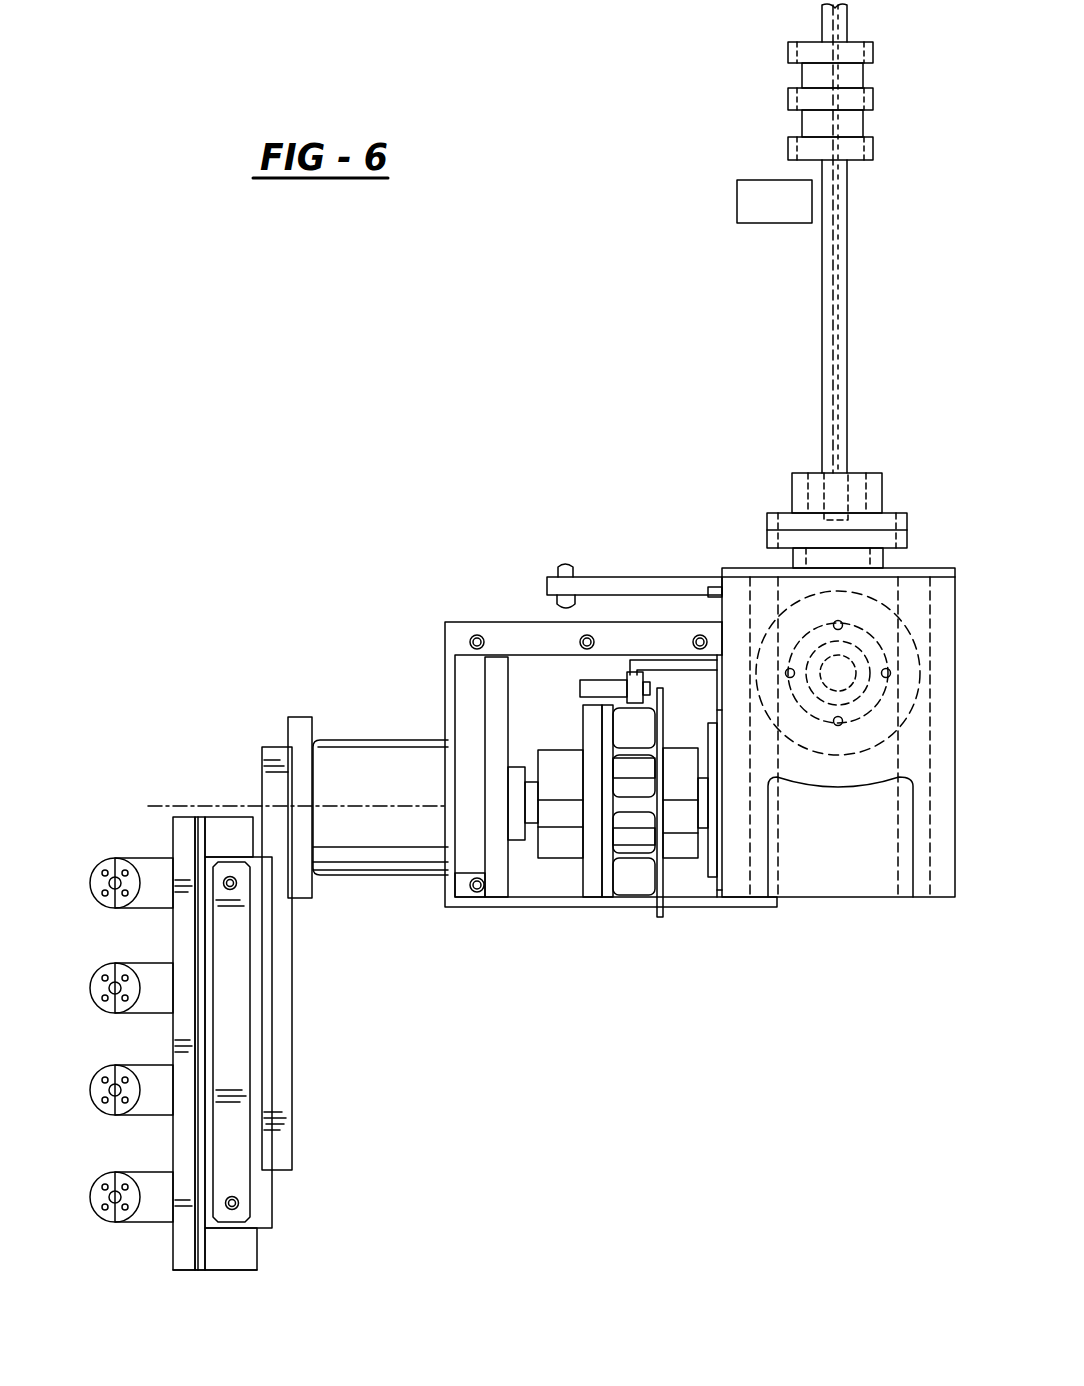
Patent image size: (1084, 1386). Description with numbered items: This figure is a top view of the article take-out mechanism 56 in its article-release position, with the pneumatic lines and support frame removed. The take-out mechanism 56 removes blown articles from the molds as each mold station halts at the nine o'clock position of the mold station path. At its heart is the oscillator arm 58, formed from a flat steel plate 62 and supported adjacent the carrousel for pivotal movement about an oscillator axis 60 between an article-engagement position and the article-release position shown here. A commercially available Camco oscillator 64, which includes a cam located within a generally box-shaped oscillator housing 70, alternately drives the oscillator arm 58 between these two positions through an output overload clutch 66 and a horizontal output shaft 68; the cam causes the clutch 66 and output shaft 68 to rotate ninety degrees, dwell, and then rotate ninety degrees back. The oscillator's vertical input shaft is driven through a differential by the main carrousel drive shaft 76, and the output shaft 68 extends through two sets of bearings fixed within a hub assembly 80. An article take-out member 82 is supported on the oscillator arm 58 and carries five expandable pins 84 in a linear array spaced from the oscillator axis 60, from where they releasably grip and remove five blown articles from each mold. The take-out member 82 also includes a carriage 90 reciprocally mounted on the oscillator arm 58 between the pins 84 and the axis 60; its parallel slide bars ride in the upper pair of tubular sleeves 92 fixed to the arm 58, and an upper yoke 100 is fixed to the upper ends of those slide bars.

The article take-out mechanism 56 is at (540, 500).
The oscillator arm 58 is at (292, 1147).
The oscillator axis 60 is at (163, 805).
The flat steel plate 62 is at (280, 1030).
The oscillator 64 is at (828, 905).
The output overload clutch 66 is at (593, 893).
The horizontal output shaft 68 is at (537, 825).
The oscillator housing 70 is at (915, 583).
The main carrousel drive shaft 76 is at (828, 293).
The hub assembly 80 is at (420, 752).
The article take-out member 82 is at (218, 1272).
The expandable pins 84 is at (118, 868).
The carriage 90 is at (757, 190).
The upper pair of parallel tubular sleeves 92 is at (232, 830).
The upper yoke 100 is at (238, 1185).